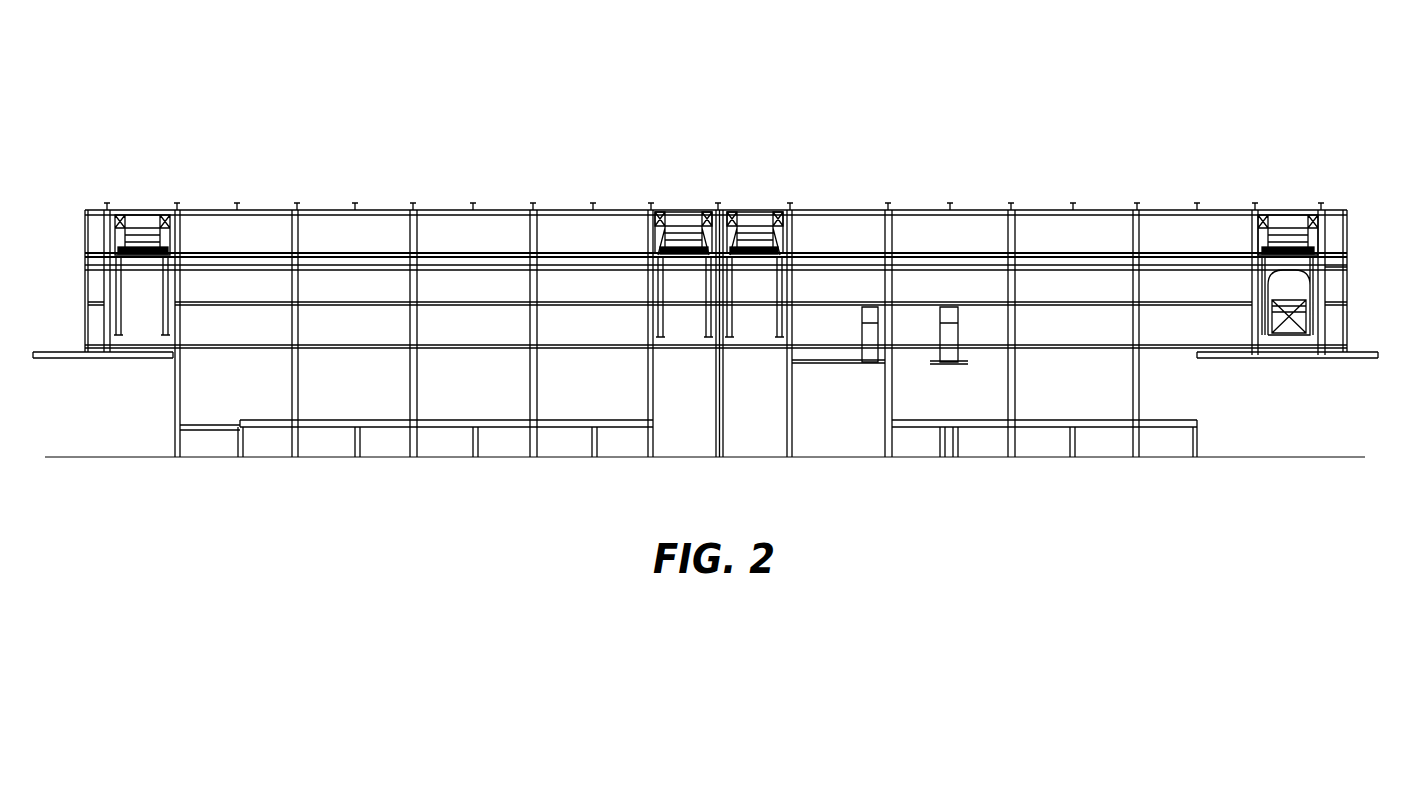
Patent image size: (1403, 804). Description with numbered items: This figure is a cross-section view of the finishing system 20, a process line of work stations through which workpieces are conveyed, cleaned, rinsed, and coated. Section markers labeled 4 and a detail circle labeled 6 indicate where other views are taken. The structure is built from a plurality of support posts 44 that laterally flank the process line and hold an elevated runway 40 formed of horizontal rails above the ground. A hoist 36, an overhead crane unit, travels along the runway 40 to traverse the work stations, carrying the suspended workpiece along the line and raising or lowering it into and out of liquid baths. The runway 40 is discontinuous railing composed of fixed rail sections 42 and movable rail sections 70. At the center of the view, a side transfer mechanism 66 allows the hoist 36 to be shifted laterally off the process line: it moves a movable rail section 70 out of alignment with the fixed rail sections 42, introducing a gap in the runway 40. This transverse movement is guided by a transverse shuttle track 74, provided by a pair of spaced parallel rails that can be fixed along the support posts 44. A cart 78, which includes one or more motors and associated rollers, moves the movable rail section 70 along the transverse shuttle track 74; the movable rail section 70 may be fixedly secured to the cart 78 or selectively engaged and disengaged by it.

The finishing system 20 is at (213, 107).
The section line 4- 4 is at (718, 127).
The detail view 6 is at (62, 250).
The runway 40 is at (447, 240).
The fixed rail section 42 is at (567, 253).
The support posts 44 is at (298, 370).
The hoist 36 is at (683, 228).
The side transfer mechanism 66 is at (687, 205).
The cart 78 is at (704, 217).
The transverse shuttle track 74 is at (698, 258).
The movable rail section 70 is at (698, 265).